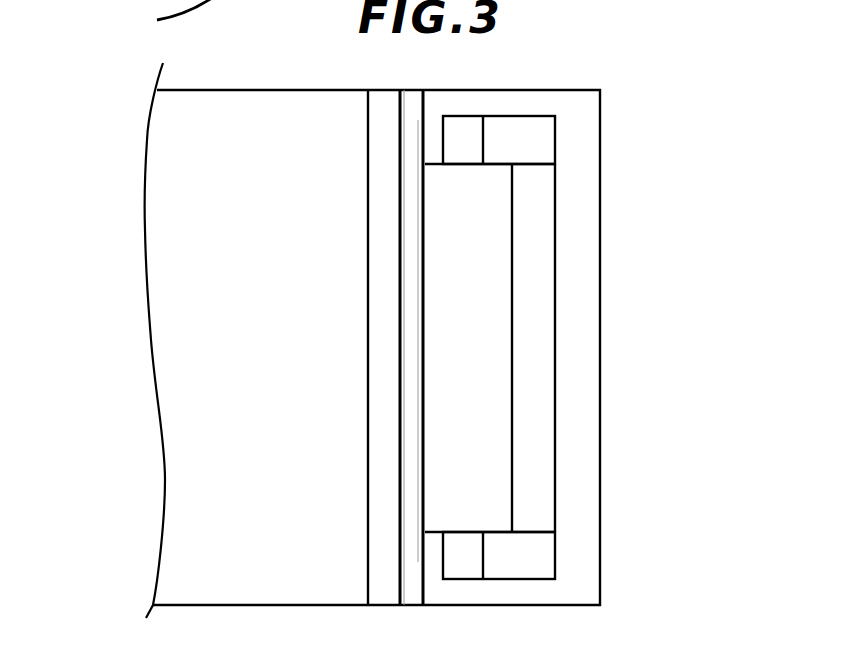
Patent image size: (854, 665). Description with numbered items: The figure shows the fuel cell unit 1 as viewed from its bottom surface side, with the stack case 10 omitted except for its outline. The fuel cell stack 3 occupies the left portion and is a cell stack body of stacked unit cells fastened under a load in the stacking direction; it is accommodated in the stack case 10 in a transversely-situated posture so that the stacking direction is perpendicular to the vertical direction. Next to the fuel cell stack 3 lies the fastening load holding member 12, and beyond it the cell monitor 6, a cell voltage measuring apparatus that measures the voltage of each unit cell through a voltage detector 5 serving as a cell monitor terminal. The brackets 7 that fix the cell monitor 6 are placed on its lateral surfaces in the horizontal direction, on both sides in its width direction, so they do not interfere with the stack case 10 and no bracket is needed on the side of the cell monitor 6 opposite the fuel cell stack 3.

The fuel cell unit 1 is at (98, 133).
The fuel cell stack 3 is at (262, 110).
The voltage detector 5 is at (174, 17).
The cell monitor 6 is at (540, 349).
The bracket 7 is at (510, 113).
The stack case 10 is at (605, 205).
The fastening load holding member 12 is at (403, 108).